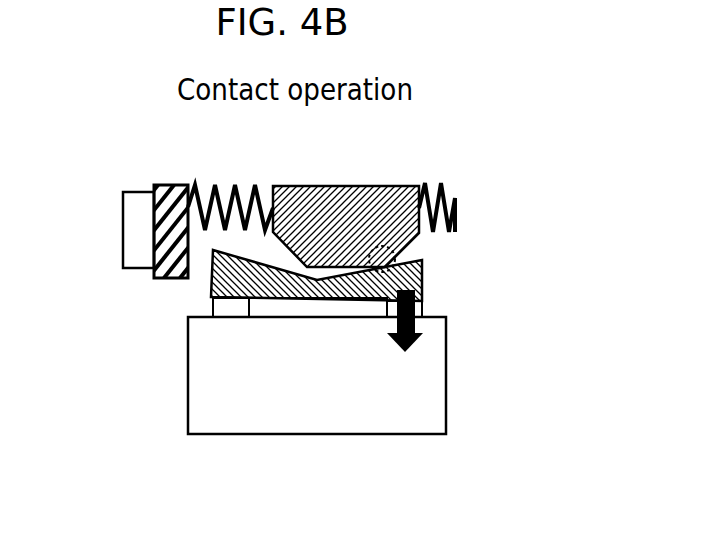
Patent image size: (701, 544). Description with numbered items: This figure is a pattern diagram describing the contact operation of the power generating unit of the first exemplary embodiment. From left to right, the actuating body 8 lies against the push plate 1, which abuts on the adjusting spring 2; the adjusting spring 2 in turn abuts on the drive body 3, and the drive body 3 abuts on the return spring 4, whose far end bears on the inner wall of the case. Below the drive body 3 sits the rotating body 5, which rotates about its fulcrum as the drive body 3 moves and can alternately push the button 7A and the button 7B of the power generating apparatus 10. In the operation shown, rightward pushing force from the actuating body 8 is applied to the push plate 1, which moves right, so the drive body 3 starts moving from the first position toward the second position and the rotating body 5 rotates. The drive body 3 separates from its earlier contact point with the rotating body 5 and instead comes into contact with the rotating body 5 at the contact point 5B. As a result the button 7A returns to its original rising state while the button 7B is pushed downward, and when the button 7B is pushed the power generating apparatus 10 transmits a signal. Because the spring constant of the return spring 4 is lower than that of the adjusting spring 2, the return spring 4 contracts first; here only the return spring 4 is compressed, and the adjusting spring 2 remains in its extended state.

The push plate 1 is at (170, 202).
The adjusting spring 2 is at (240, 195).
The drive body 3 is at (343, 212).
The return spring 4 is at (442, 183).
The rotating body 5 is at (238, 279).
The contact point 5B is at (394, 260).
The button 7A is at (212, 308).
The button 7B is at (423, 309).
The actuating body 8 is at (140, 205).
The power generating apparatus 10 is at (277, 405).